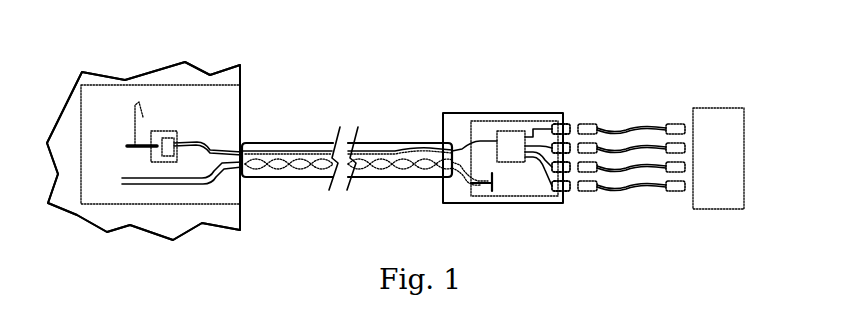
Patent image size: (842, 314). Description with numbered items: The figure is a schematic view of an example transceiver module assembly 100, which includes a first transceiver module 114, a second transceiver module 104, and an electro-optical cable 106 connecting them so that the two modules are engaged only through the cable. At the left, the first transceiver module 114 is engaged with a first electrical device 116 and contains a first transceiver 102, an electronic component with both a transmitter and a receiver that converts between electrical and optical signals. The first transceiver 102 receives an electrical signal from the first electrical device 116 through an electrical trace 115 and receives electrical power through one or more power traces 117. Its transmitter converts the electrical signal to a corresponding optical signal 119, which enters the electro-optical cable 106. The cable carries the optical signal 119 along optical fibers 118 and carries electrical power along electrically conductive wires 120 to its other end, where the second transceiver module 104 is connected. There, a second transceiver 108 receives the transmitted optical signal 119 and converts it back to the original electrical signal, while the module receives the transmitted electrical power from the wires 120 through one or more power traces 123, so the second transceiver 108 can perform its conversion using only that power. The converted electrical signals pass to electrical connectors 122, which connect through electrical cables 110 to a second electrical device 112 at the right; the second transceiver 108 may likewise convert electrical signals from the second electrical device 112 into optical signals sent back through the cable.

The transceiver module assembly 100 is at (80, 45).
The first transceiver 102 is at (178, 140).
The second transceiver module 104 is at (463, 102).
The electro-optical cable 106 is at (325, 116).
The second transceiver 108 is at (509, 140).
The electrical cable 110 is at (587, 210).
The second electrical device 112 is at (705, 161).
The first transceiver module 114 is at (212, 194).
The electrical trace 115 is at (145, 118).
The first electrical device 116 is at (140, 220).
The power trace 117 is at (122, 183).
The optical fibers 118 is at (405, 150).
The optical signal 119 is at (214, 152).
The wires 120 is at (415, 163).
The electrical connectors 122 is at (558, 190).
The power trace 123 is at (485, 190).